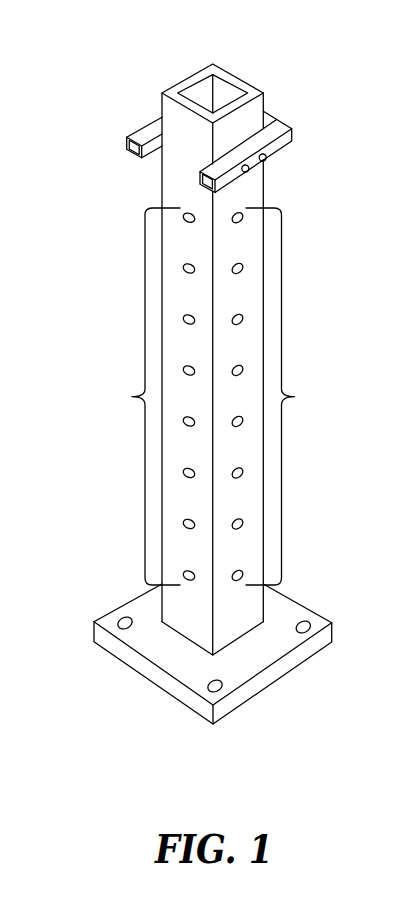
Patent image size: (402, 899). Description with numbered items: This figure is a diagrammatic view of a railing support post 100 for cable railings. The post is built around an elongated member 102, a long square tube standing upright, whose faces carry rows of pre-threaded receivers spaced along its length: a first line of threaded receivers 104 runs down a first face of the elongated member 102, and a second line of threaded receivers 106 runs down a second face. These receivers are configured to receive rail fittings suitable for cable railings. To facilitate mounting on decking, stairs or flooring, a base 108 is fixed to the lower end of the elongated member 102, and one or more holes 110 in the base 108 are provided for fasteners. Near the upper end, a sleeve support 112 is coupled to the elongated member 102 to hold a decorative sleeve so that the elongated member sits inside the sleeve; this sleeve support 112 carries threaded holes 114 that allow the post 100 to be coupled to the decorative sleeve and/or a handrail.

The railing support post 100 is at (212, 422).
The elongated member 102 is at (162, 102).
The first line of threaded receivers 104 is at (132, 397).
The second line of threaded receivers 106 is at (294, 397).
The base 108 is at (142, 678).
The holes 110 is at (117, 624).
The threaded holes 112 is at (292, 134).
The bracket holes 114 is at (266, 158).